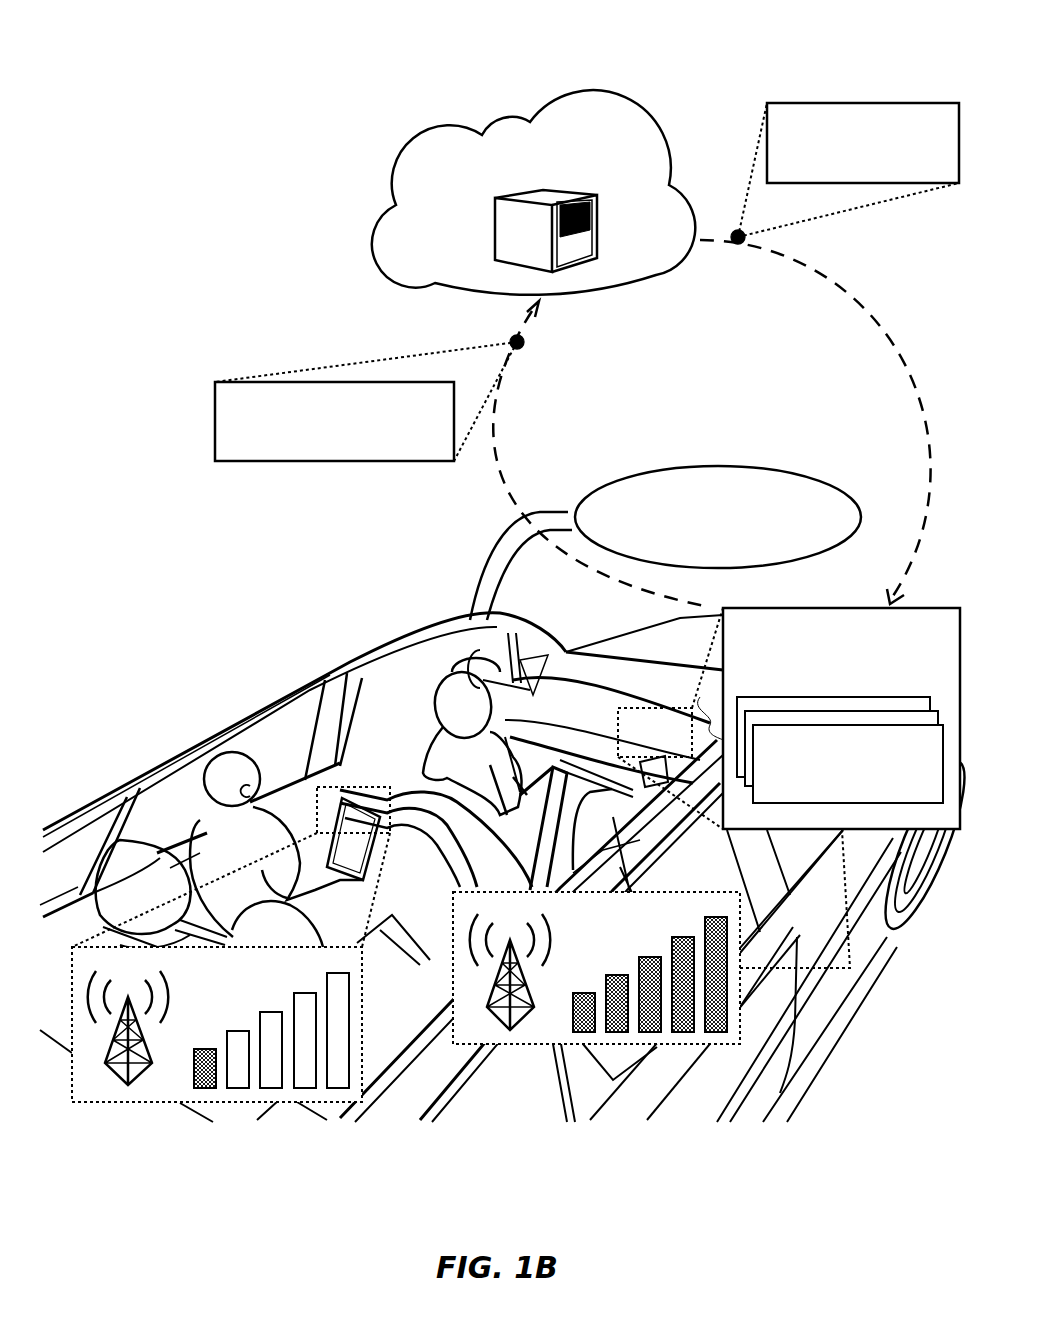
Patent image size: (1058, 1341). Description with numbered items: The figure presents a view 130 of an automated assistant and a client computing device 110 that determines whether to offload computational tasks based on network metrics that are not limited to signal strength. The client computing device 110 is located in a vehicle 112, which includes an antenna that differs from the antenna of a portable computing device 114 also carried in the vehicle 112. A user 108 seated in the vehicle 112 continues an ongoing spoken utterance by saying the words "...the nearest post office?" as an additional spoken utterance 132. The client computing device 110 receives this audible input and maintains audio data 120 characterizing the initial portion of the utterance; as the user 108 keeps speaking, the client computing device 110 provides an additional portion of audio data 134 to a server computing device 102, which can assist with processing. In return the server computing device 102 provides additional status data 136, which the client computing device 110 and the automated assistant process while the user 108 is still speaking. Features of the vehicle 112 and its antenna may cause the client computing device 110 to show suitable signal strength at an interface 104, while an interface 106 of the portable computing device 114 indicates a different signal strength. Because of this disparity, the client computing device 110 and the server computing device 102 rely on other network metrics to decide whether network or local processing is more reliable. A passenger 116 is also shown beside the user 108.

The view 130 is at (172, 76).
The server computing device 102 is at (540, 244).
The additional status data 136 is at (847, 179).
The additional portion of audio data 134 is at (318, 458).
The additional spoken utterance 132 is at (737, 466).
The user 108 is at (447, 680).
The vehicle 112 is at (681, 653).
The client computing device 110 is at (789, 718).
The audio data 120 is at (832, 787).
The portable computing device 114 is at (335, 828).
The passenger 116 is at (250, 860).
The interface 106 is at (253, 997).
The interface 104 is at (633, 941).